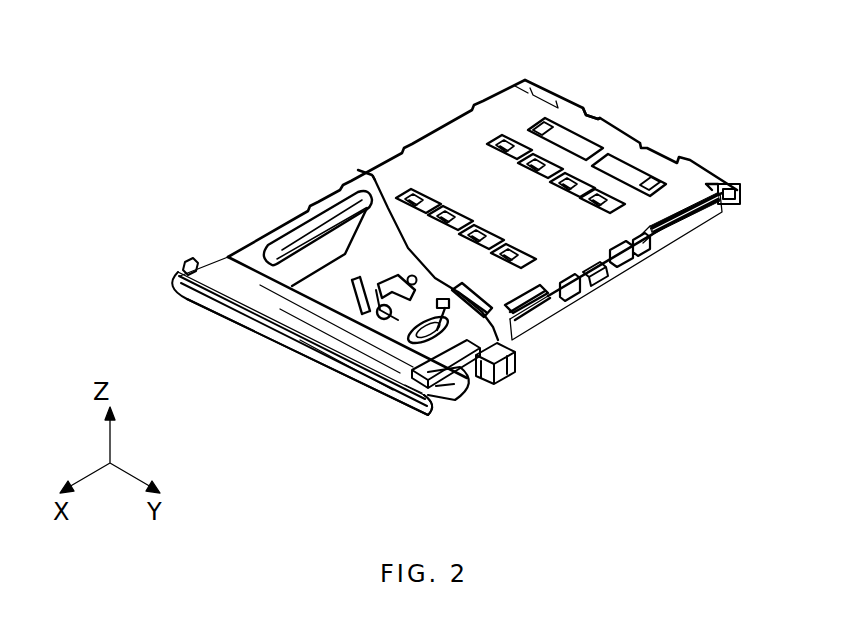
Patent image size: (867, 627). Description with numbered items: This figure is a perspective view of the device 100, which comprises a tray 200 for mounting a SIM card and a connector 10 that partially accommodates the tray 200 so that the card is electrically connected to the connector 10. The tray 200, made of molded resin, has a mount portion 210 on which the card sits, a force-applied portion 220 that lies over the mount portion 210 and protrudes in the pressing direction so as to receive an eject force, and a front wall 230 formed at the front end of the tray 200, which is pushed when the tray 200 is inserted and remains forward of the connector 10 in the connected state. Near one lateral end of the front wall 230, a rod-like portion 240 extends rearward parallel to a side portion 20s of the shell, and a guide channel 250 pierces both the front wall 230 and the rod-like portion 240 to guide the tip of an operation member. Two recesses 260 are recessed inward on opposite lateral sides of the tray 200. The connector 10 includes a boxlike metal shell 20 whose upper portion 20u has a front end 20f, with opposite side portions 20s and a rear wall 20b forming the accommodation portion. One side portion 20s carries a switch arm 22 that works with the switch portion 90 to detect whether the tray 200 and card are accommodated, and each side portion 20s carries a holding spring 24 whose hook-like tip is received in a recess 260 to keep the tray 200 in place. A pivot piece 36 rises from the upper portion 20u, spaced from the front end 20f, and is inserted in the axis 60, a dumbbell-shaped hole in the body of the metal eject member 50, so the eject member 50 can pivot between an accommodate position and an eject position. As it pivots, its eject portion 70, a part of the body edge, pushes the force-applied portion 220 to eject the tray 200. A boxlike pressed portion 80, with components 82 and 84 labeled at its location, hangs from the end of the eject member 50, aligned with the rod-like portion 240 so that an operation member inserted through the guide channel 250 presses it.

The connector 10 is at (457, 90).
The device 100 is at (699, 106).
The shell 20 is at (452, 135).
The upper portion 20u is at (520, 92).
The rear wall 20b is at (603, 121).
The front end 20f is at (197, 290).
The side portions 20s is at (641, 258).
The switch arm 22 is at (690, 233).
The holding spring 24 is at (540, 326).
The pivot piece 36 is at (357, 318).
The eject member 50 is at (390, 230).
The axis 60 is at (397, 387).
The eject portion 70 is at (246, 270).
The pressed portion 80 is at (632, 345).
The first switch terminal 82 is at (512, 338).
The second switch terminal 84 is at (508, 364).
The switch portion 90 is at (728, 203).
The tray 200 is at (167, 278).
The mount portion 210 is at (318, 350).
The force-applied portion 220 is at (300, 305).
The front wall 230 is at (393, 398).
The rod-like portion 240 is at (453, 387).
The guide channel 250 is at (420, 410).
The recesses 260 is at (560, 310).